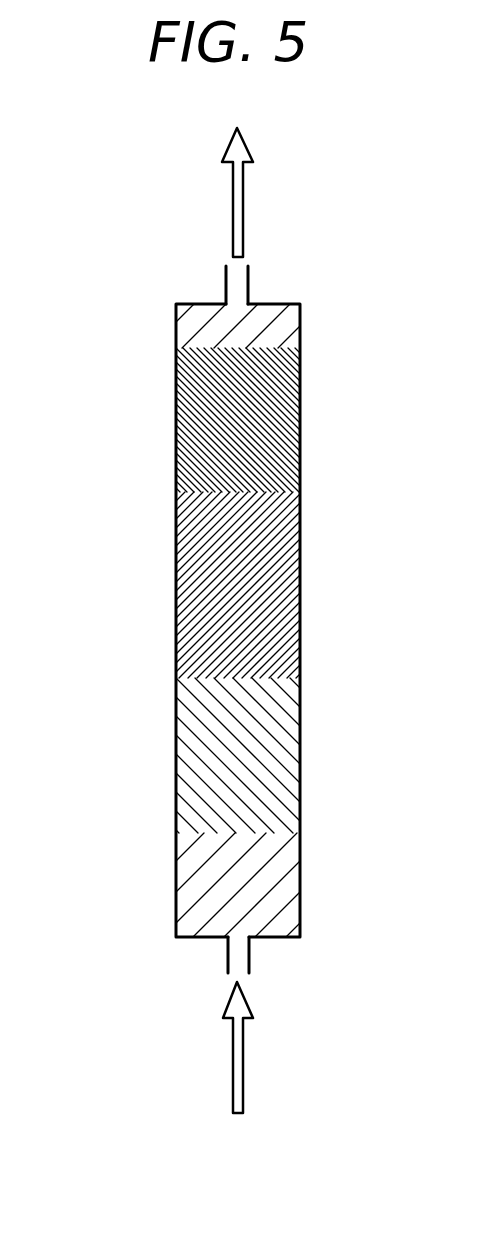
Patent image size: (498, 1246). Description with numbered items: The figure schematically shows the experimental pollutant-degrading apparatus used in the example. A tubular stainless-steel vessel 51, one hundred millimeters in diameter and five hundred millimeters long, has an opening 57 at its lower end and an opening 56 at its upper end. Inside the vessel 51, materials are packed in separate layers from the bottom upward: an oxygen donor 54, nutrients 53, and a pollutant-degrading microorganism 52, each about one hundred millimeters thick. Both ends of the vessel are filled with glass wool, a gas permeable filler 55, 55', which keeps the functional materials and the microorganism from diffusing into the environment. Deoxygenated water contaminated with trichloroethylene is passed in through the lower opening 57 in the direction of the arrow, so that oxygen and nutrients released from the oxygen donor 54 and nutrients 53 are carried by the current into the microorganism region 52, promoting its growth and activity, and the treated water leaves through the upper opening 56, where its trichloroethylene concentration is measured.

The tubular vessel 51 is at (176, 440).
The pollutant-degrading microorganism region 52 is at (280, 415).
The nutrients 53 is at (280, 527).
The oxygen donor 54 is at (280, 747).
The gas permeable filler 55 is at (279, 885).
The gas permeable filler 55' is at (281, 296).
The opening 56 is at (225, 278).
The opening 57 is at (228, 963).